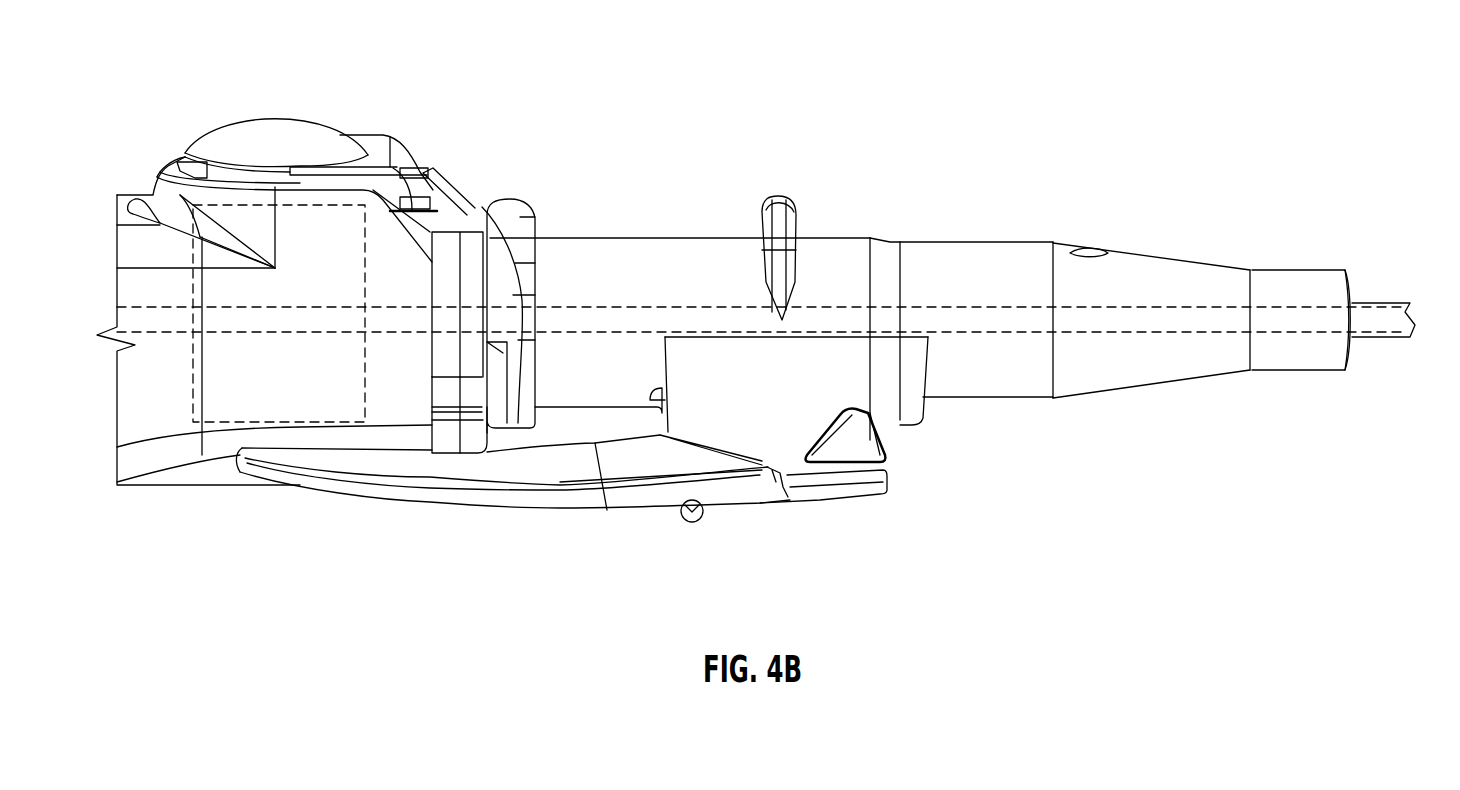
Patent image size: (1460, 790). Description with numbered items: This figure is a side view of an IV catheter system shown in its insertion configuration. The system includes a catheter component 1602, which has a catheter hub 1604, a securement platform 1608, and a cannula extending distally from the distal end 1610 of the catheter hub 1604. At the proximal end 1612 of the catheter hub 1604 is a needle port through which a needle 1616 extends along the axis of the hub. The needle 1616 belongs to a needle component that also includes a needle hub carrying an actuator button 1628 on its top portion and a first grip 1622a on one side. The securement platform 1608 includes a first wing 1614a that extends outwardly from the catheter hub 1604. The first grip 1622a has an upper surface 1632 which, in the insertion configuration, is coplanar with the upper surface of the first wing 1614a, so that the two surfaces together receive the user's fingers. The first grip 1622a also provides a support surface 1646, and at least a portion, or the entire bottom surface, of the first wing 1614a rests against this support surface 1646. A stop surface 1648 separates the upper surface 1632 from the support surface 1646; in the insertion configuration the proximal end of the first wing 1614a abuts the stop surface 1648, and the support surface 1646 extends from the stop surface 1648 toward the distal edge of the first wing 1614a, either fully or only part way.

The catheter component 1602 is at (1186, 236).
The catheter hub 1604 is at (960, 257).
The securement platform 1608 is at (884, 443).
The distal end 1610 is at (1352, 284).
The proximal end 1612 is at (513, 300).
The first wing 1614a is at (795, 434).
The needle 1616 is at (628, 322).
The first grip 1622a is at (345, 462).
The actuator button 1628 is at (268, 132).
The upper surface 1632 is at (683, 452).
The support surface 1646 is at (830, 488).
The stop surface 1648 is at (768, 485).